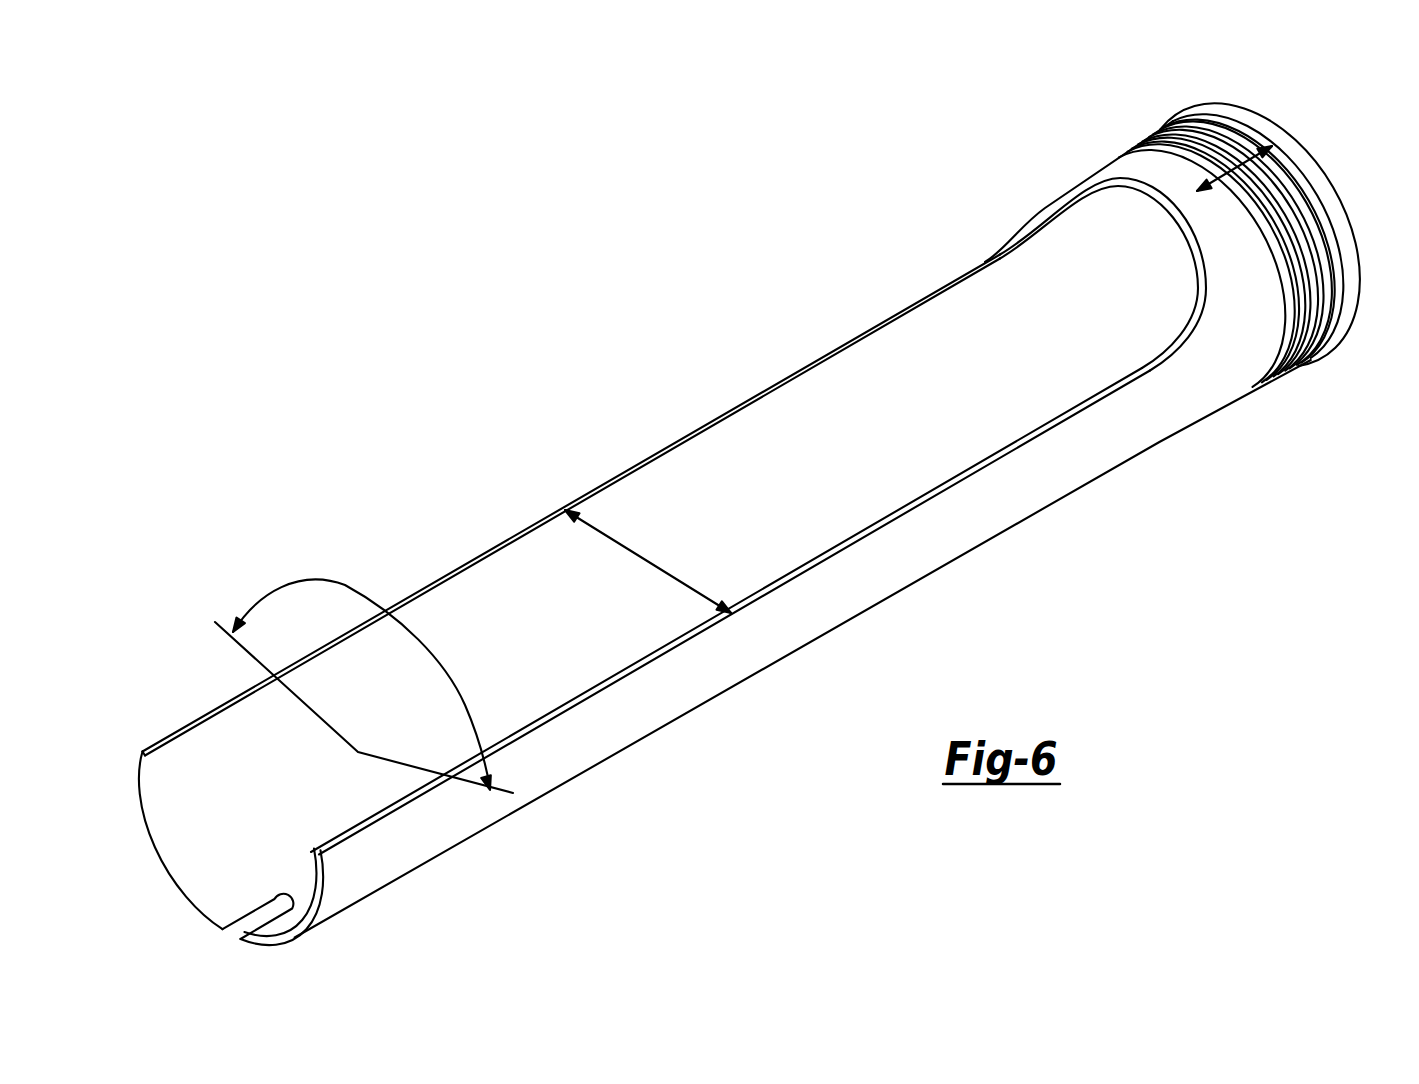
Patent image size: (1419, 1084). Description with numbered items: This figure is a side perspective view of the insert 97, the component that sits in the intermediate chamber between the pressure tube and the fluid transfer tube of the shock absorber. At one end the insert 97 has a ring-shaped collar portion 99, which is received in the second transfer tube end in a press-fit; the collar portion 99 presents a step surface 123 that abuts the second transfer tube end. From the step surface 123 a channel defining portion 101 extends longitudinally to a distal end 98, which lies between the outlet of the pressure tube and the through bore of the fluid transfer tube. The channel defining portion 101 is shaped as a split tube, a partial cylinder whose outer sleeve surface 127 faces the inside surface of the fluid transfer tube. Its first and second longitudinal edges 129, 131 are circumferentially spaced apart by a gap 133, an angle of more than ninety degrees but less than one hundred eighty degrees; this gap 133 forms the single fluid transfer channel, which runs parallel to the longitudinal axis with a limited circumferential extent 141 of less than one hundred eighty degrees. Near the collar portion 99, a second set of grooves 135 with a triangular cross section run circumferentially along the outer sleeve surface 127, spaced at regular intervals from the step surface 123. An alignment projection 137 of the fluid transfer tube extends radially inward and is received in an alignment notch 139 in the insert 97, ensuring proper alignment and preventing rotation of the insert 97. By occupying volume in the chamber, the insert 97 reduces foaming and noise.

The insert 97 is at (727, 308).
The distal end 98 is at (317, 876).
The collar portion 99 is at (1308, 173).
The channel defining portion 101 is at (1030, 497).
The step surface 123 is at (1311, 371).
The outer sleeve surface 127 is at (982, 550).
The first longitudinal edge 129 is at (596, 486).
The second longitudinal edge 131 is at (796, 578).
The gap 133 is at (655, 572).
The second set of grooves 135 is at (1300, 323).
The alignment projection 137 is at (1233, 167).
The alignment notch 139 is at (252, 922).
The limited circumferential extent 141 is at (343, 582).